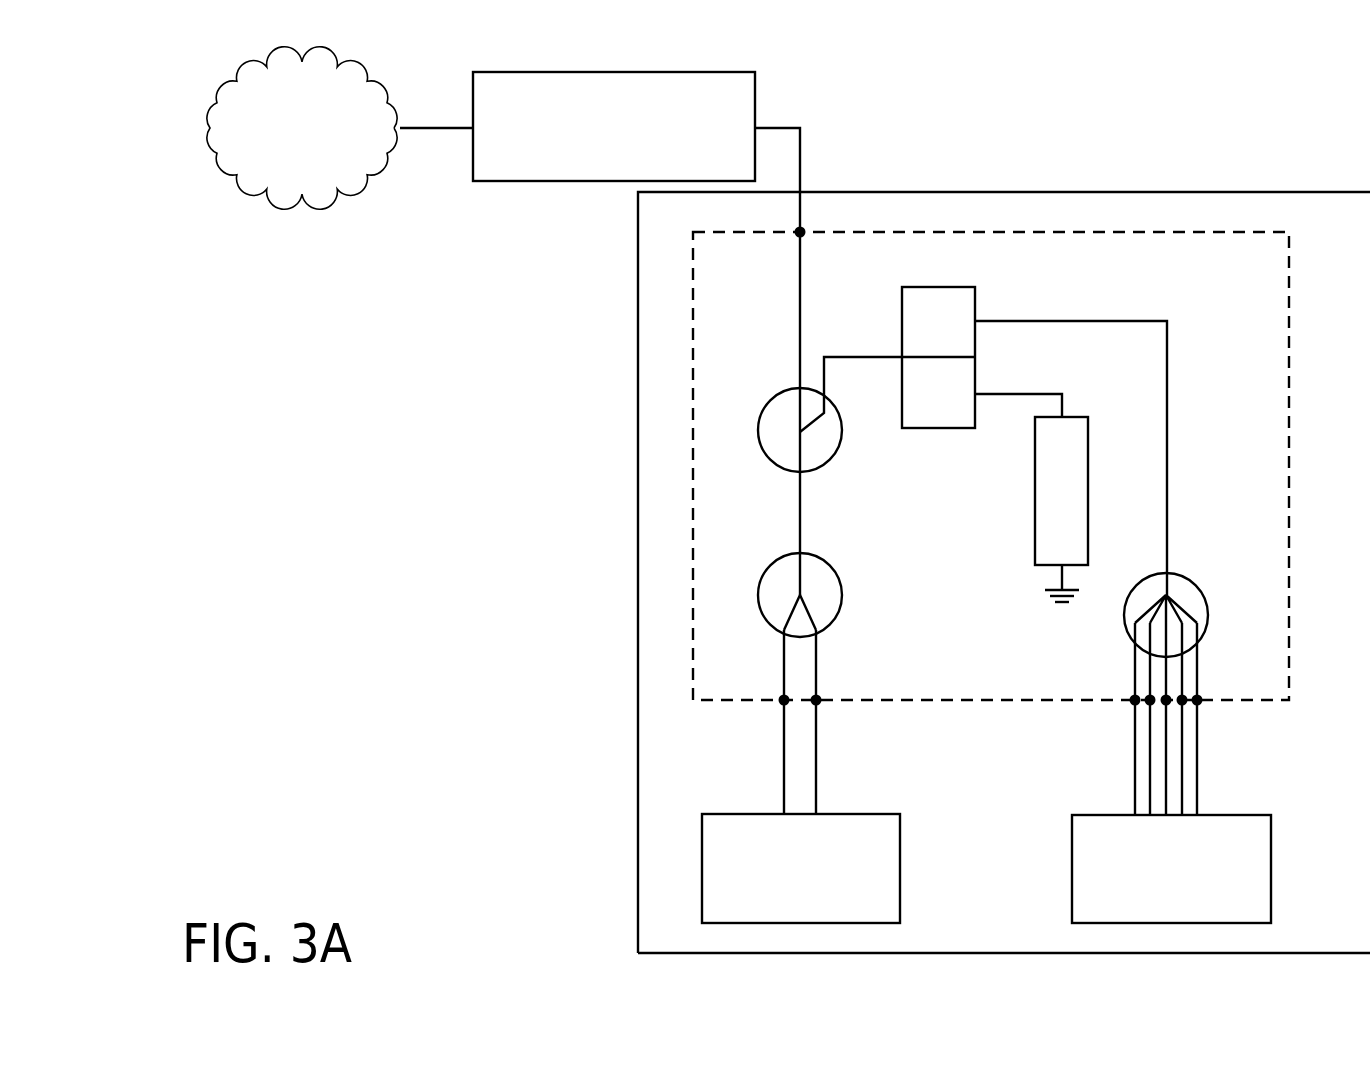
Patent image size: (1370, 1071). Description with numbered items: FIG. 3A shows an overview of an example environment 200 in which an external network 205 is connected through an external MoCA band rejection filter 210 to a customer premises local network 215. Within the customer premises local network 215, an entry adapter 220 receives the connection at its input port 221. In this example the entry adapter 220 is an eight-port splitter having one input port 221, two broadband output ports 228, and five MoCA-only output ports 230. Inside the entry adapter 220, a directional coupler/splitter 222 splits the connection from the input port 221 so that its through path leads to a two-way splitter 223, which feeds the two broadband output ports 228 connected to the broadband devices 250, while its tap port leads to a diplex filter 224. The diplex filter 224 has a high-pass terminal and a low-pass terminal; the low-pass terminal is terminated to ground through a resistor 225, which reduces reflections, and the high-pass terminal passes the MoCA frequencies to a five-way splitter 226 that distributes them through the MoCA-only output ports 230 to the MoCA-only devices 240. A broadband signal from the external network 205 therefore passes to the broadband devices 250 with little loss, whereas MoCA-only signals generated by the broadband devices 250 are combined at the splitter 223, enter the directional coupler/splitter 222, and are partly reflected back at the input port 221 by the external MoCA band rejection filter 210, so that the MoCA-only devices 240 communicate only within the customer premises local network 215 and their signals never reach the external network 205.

The environment 200 is at (200, 60).
The external network 205 is at (284, 171).
The external MoCA band rejection filter 210 is at (598, 165).
The customer premises local network 215 is at (1058, 192).
The entry adapter 220 is at (1200, 303).
The input port 221 is at (800, 232).
The directional coupler/splitter 222 is at (823, 466).
The splitter 223 is at (843, 592).
The diplex filter 224 is at (958, 287).
The resistor 225 is at (1031, 498).
The splitter 226 is at (1125, 612).
The broadband output ports 228 is at (868, 722).
The MoCA-only output ports 230 is at (1225, 719).
The MoCA-only devices 240 is at (1155, 908).
The broadband devices 250 is at (784, 909).